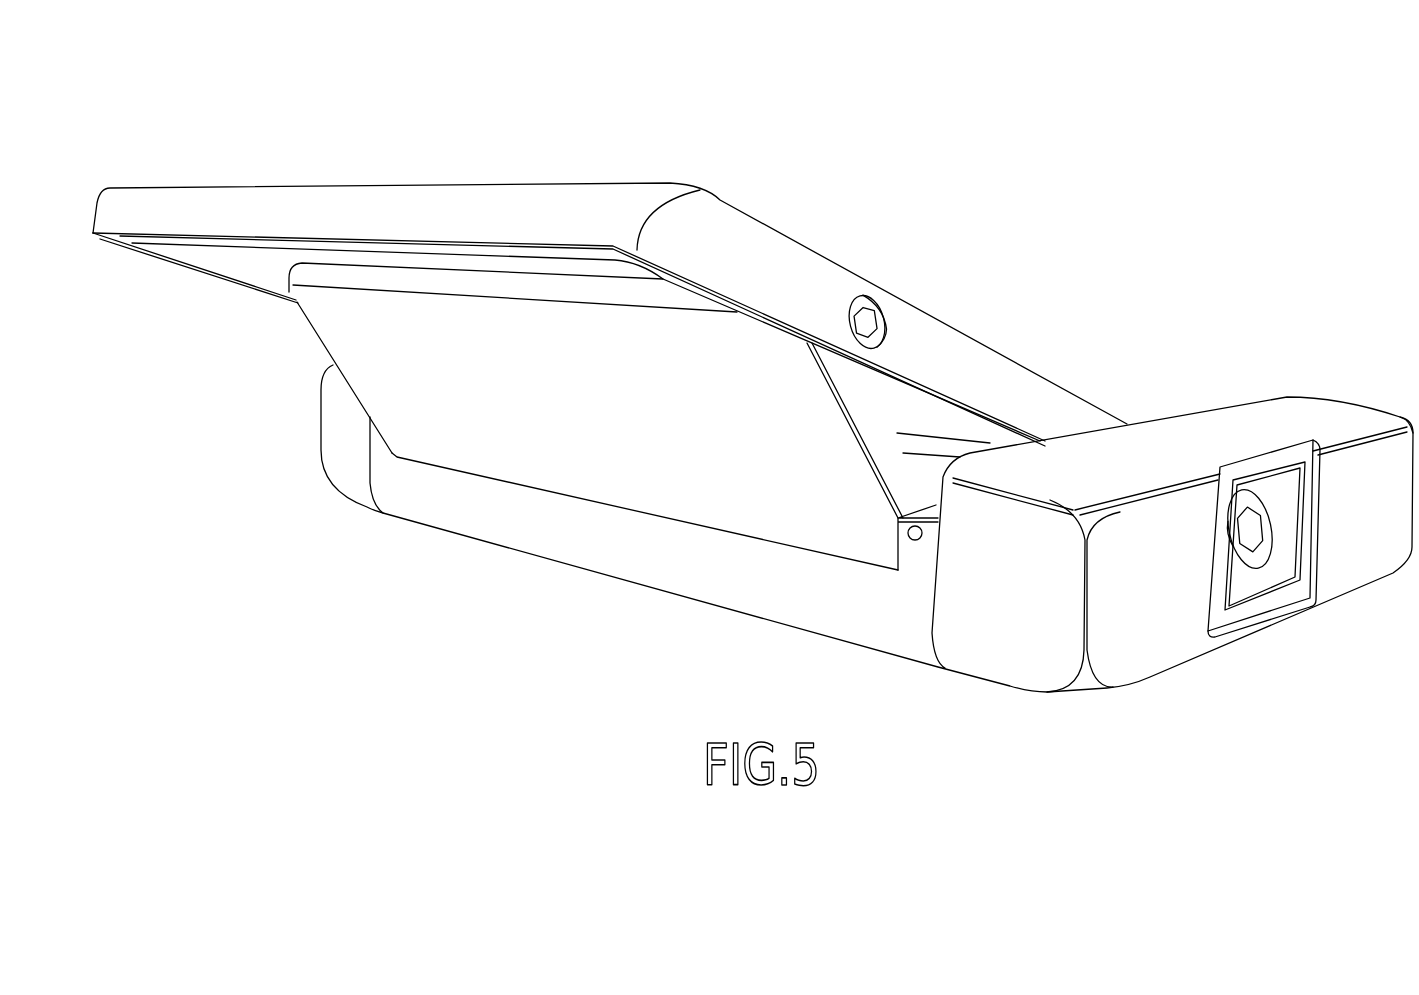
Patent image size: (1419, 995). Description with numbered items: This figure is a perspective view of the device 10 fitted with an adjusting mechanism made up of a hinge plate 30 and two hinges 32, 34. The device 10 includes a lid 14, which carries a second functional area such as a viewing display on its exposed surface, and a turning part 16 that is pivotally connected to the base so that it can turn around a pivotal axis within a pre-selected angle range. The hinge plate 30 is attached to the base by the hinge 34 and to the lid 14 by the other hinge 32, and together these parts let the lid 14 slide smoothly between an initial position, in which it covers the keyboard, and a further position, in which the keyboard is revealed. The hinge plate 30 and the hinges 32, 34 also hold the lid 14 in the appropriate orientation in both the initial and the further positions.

The device 10 is at (628, 115).
The lid 14 is at (730, 243).
The turning part 16 is at (1238, 440).
The hinge plate 30 is at (402, 338).
The hinge 32 is at (887, 318).
The hinge 34 is at (909, 539).